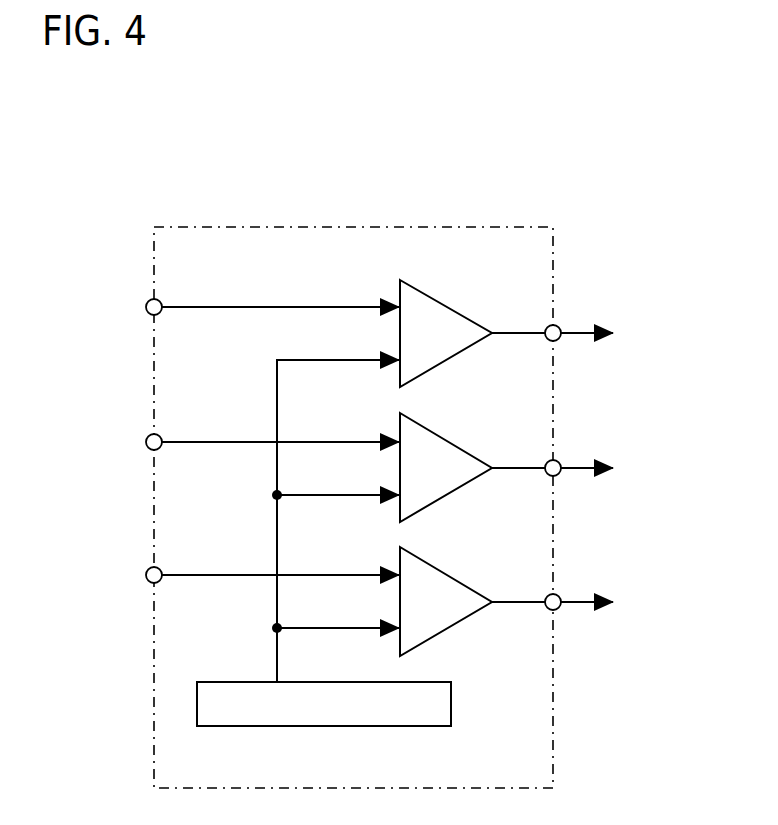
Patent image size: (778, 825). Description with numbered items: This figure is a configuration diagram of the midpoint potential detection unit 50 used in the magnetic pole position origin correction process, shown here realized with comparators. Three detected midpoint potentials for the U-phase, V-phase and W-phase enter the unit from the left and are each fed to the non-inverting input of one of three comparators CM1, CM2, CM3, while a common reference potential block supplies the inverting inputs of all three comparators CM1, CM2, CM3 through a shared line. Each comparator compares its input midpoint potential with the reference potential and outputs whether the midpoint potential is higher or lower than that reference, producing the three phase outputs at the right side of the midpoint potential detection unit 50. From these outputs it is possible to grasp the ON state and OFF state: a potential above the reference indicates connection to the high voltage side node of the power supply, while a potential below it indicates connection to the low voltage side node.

The midpoint potential detection unit 50 is at (352, 227).
The comparator CM1 is at (445, 302).
The comparator CM2 is at (445, 437).
The comparator CM3 is at (445, 571).